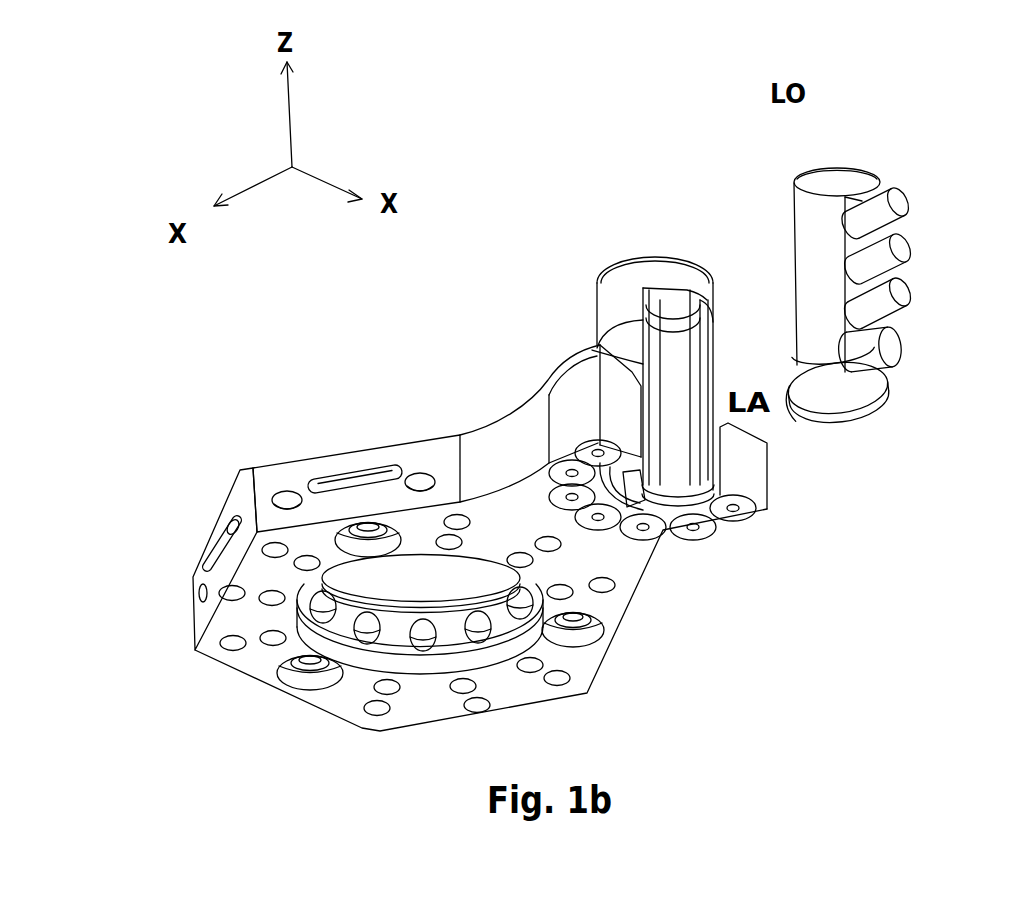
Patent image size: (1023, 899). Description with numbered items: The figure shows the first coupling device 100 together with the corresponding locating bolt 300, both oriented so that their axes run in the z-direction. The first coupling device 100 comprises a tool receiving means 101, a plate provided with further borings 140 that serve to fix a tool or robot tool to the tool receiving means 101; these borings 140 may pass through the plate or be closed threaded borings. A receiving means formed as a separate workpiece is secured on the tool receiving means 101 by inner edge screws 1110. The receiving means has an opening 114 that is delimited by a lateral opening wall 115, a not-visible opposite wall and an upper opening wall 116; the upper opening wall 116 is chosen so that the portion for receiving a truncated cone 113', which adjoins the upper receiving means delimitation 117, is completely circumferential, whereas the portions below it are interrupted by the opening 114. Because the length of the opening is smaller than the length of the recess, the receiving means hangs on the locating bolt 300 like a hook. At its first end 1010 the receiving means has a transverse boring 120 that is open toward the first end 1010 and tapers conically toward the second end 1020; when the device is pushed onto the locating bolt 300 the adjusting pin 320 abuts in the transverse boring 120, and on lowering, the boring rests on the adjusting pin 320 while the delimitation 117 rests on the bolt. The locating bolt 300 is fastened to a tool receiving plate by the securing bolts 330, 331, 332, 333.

The first coupling device 100 is at (186, 486).
The tool receiving means 101 is at (198, 563).
The borings 140 is at (293, 678).
The transverse boring 120 is at (623, 498).
The screws 1110 is at (687, 504).
The first end 1010 is at (694, 509).
The opening 114 is at (648, 365).
The second end 1020 is at (638, 245).
The upper receiving means delimitation 117 is at (678, 313).
The portion for receiving a truncated cone 113' is at (681, 209).
The upper opening wall 116 is at (694, 300).
The lateral opening wall 115 is at (708, 377).
The adjusting pin 320 is at (795, 380).
The locating bolt 300 is at (878, 440).
The securing bolt 330 is at (897, 340).
The securing bolt 331 is at (903, 291).
The securing bolt 332 is at (902, 247).
The securing bolt 333 is at (900, 201).